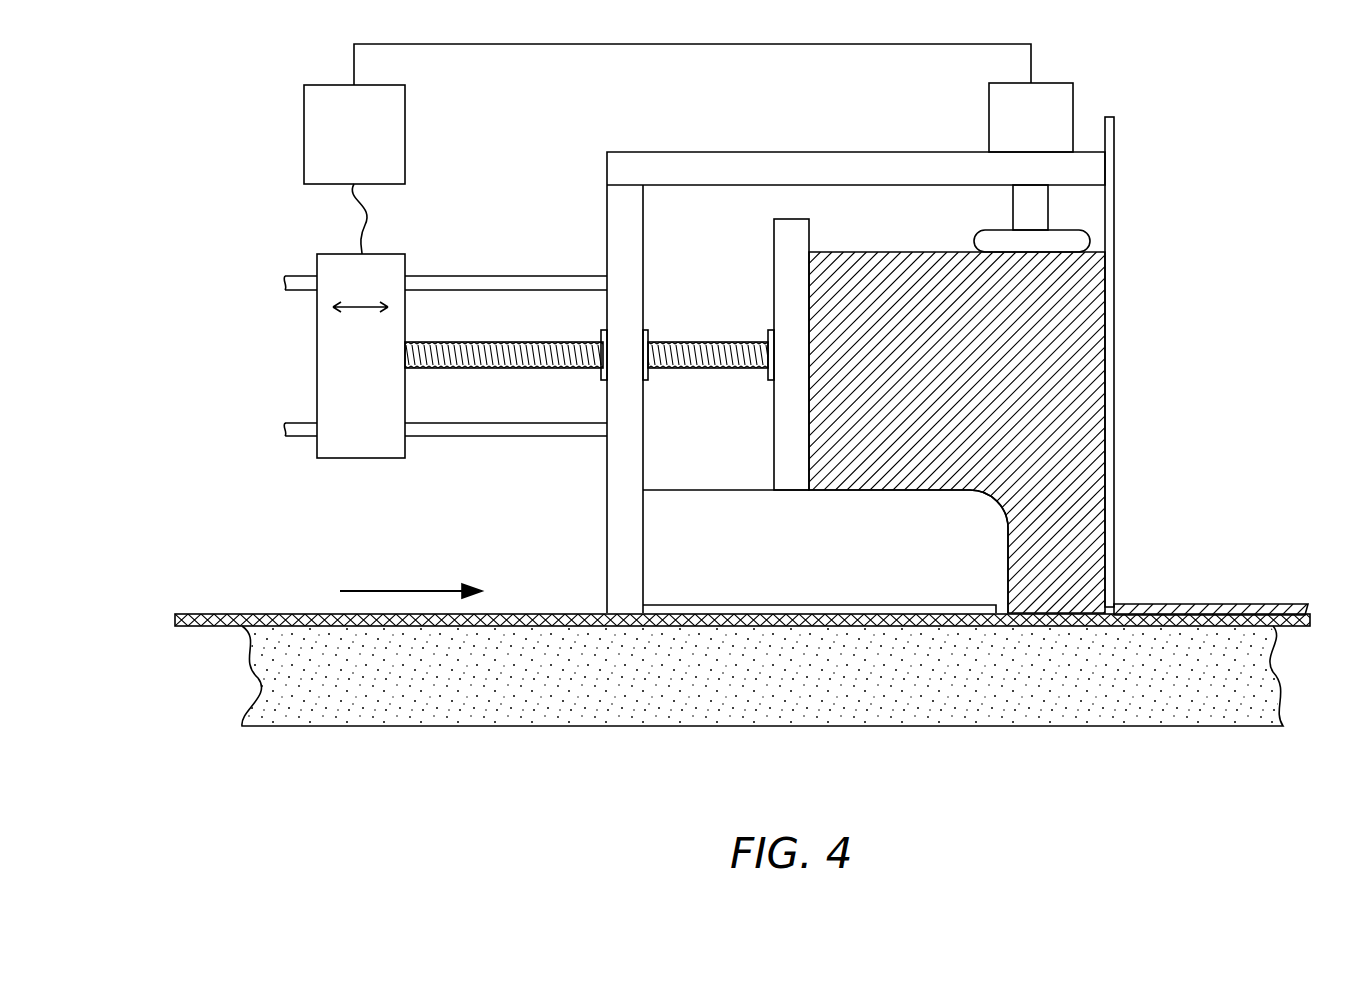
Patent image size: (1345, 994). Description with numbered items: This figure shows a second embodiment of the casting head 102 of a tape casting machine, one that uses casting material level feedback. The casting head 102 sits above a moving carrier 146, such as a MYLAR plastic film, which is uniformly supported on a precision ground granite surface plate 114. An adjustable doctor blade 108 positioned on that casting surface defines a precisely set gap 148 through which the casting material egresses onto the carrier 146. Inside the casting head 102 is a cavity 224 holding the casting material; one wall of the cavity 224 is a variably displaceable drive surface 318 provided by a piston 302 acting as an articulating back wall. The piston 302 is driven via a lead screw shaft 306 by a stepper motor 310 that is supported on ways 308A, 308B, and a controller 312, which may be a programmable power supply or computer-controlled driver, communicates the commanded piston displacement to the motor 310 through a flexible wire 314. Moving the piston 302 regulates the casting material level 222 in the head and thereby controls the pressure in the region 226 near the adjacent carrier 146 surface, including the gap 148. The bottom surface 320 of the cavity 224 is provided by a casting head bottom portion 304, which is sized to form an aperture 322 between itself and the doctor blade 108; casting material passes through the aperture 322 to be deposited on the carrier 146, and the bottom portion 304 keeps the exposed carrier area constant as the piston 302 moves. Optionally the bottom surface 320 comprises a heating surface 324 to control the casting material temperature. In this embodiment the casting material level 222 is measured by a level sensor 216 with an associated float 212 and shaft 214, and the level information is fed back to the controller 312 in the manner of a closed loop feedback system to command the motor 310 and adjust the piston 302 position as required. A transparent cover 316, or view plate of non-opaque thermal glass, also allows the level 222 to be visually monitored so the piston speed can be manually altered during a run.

The casting head 102 is at (580, 206).
The doctor blade 108 is at (1115, 138).
The granite surface plate 114 is at (645, 690).
The carrier 146 is at (557, 613).
The gap 148 is at (1110, 606).
The float 212 is at (1062, 240).
The shaft 214 is at (1030, 207).
The level sensor 216 is at (1073, 118).
The casting material level 222 is at (1120, 250).
The cavity 224 is at (908, 322).
The region 226 is at (1068, 597).
The piston 302 is at (785, 252).
The casting head bottom portion 304 is at (714, 512).
The lead screw shaft 306 is at (675, 342).
The way 308A is at (540, 277).
The way 308B is at (508, 423).
The motor 310 is at (362, 458).
The controller 312 is at (405, 135).
The flexible wire 314 is at (368, 212).
The transparent cover 316 is at (858, 150).
The drive surface 318 is at (812, 352).
The bottom surface 320 is at (905, 490).
The aperture 322 is at (1053, 568).
The heating surface 324 is at (790, 473).